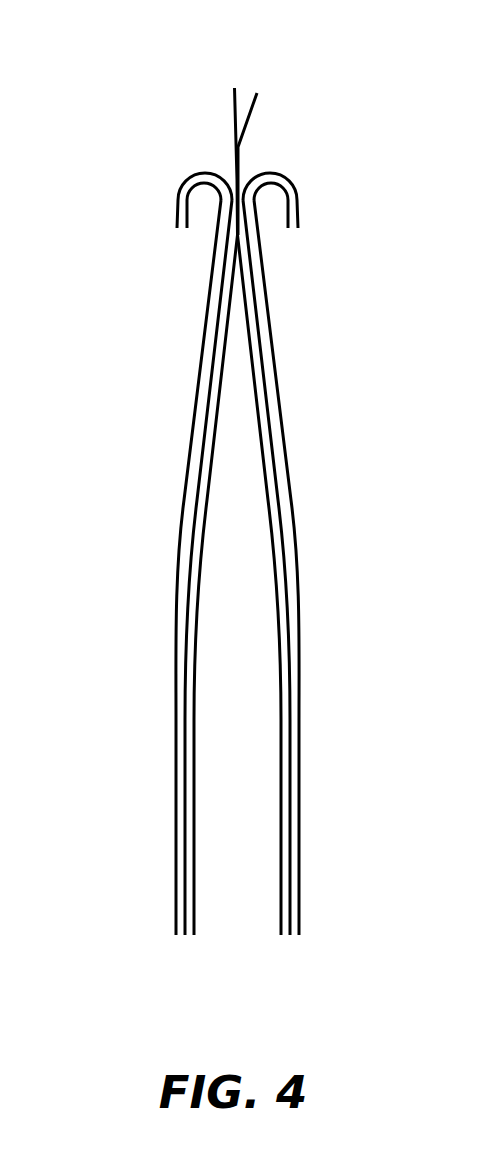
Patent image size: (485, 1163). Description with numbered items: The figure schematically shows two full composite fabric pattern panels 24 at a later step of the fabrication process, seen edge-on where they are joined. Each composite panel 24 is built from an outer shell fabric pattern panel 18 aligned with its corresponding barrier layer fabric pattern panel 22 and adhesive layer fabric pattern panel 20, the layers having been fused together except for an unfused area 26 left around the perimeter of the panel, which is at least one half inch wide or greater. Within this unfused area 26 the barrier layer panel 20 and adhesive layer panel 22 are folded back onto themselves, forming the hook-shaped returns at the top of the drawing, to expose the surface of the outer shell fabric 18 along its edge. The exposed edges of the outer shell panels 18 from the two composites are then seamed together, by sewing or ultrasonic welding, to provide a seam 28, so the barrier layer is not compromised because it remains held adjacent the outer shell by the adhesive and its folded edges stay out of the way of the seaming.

The outer shell fabric pattern panel 18 is at (191, 790).
The barrier layer fabric pattern panel 20 is at (180, 642).
The adhesive layer fabric pattern panel 22 is at (183, 707).
The full composite fabric pattern panel 24 is at (236, 567).
The unfused area 26 is at (320, 92).
The seam 28 is at (233, 120).